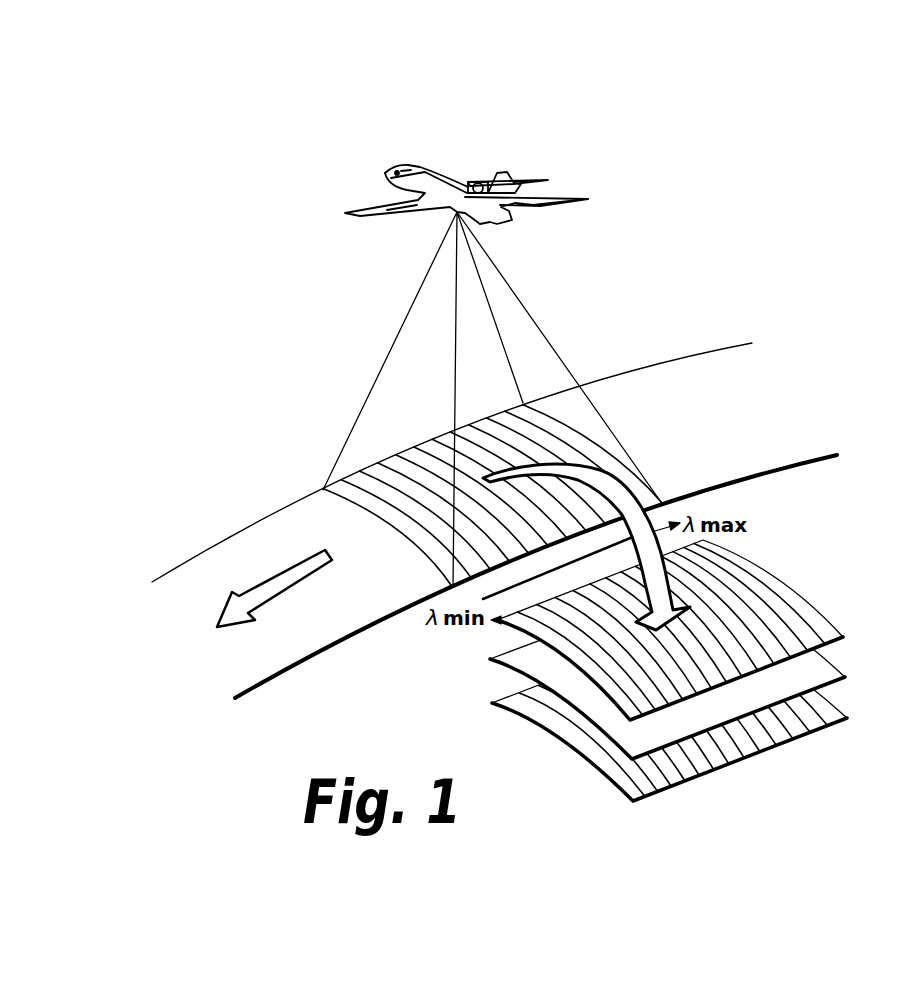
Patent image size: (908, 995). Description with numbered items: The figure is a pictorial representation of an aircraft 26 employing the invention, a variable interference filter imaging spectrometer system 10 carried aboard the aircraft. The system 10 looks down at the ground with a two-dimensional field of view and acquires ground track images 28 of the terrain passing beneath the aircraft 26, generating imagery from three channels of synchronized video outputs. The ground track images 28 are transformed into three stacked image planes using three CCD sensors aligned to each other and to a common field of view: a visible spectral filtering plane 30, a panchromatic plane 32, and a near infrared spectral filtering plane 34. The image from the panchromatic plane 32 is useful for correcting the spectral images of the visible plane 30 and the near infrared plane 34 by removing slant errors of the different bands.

The variable interference filter imaging spectrometer system 10 is at (442, 203).
The aircraft 26 is at (427, 167).
The ground track images 28 is at (401, 536).
The visible spectral filtering plane 30 is at (817, 607).
The panchromatic plane 32 is at (837, 665).
The near infrared spectral filtering plane 34 is at (843, 710).